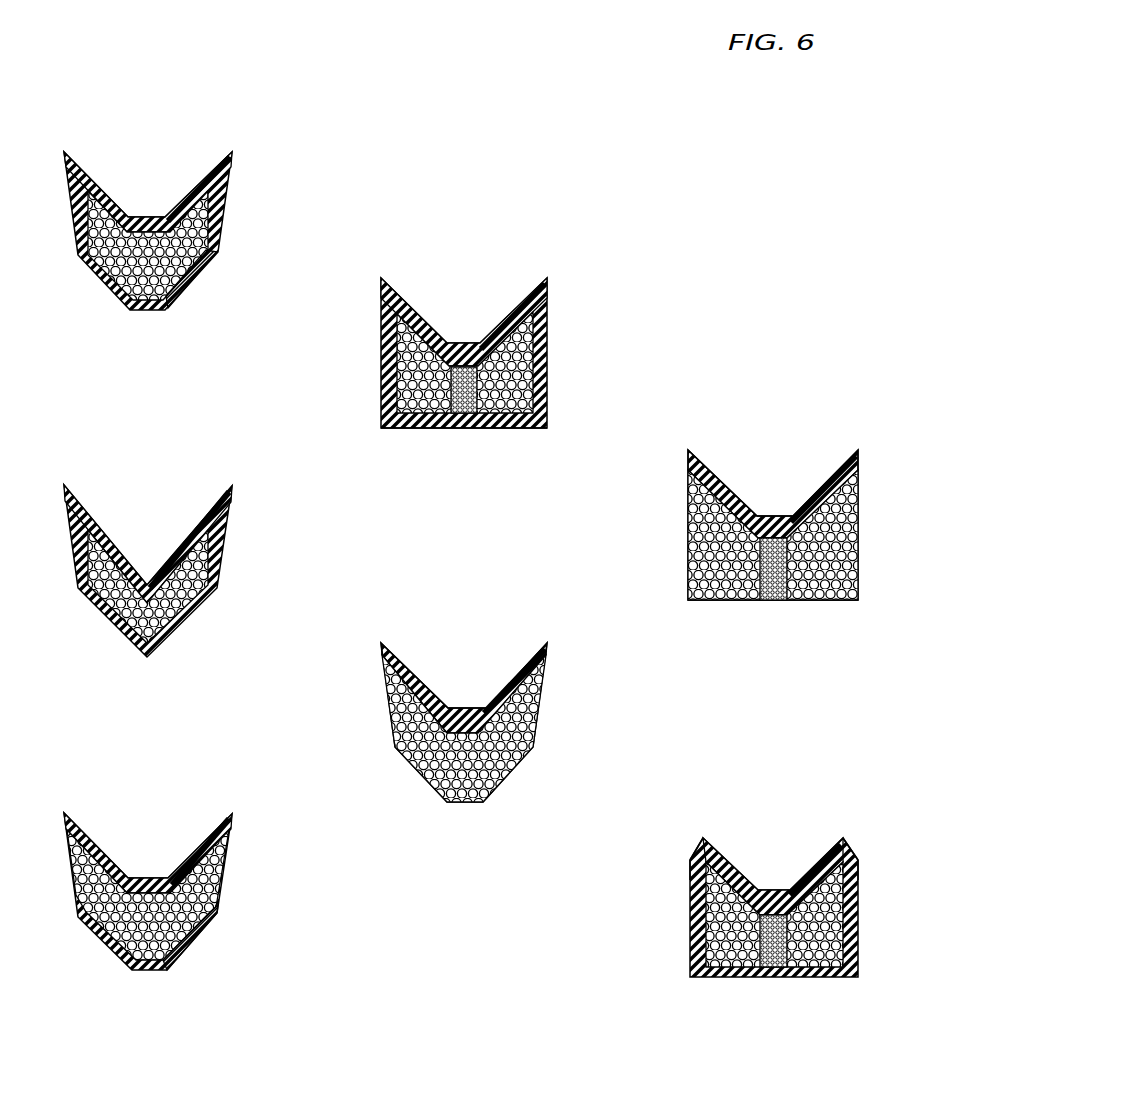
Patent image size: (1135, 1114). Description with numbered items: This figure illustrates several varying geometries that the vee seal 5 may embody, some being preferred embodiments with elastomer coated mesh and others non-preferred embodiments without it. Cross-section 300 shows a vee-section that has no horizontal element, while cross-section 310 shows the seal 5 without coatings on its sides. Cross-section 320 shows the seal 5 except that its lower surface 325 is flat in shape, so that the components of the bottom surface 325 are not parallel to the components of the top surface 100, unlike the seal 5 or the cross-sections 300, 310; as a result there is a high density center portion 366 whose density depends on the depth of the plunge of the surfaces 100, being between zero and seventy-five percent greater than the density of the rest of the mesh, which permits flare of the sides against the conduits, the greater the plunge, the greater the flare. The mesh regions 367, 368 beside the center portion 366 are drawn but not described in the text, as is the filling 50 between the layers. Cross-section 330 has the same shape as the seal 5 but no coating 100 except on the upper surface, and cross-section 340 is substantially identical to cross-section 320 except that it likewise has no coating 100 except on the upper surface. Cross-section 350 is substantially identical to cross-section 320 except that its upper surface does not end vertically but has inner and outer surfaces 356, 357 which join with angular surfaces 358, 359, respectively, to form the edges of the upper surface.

The seal 5 is at (176, 142).
The cellular core material 50 is at (193, 240).
The top surface 100 is at (228, 187).
The cross-section 300 is at (176, 468).
The cross-section 310 is at (176, 812).
The cross-section 320 is at (497, 278).
The lower surface 325 is at (468, 430).
The cross-section 330 is at (497, 642).
The cross-section 340 is at (805, 450).
The cross-section 350 is at (792, 825).
The inner surface 356 is at (850, 853).
The outer surface 357 is at (697, 855).
The angular surface 358 is at (874, 836).
The angular surface 359 is at (675, 836).
The high density center portion 366 is at (480, 400).
The right core region 367 is at (520, 380).
The left core region 368 is at (410, 364).